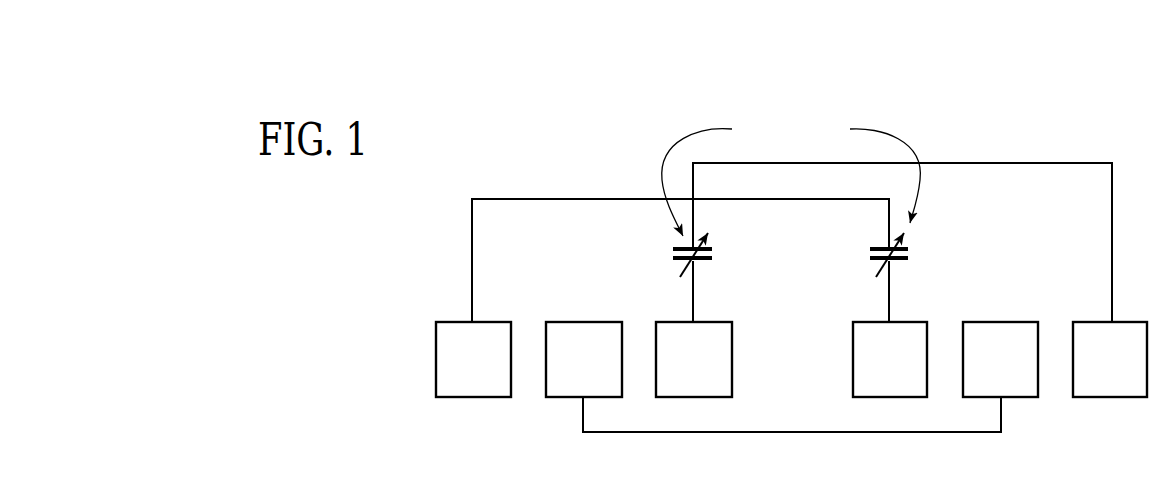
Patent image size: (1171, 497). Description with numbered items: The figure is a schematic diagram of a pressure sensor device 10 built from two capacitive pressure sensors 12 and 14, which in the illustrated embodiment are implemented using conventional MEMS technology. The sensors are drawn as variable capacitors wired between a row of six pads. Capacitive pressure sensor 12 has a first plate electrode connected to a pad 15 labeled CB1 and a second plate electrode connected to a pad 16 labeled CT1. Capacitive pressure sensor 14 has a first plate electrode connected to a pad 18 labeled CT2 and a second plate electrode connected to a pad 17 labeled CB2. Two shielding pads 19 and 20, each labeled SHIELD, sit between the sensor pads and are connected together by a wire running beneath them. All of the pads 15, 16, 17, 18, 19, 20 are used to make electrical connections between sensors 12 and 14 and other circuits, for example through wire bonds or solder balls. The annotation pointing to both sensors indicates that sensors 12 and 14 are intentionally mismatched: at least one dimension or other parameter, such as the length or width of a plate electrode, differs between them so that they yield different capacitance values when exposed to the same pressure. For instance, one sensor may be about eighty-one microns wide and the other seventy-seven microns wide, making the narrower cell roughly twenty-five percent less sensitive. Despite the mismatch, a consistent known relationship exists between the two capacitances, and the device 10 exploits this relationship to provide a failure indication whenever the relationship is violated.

The pressure sensor device 10 is at (501, 465).
The capacitive pressure sensor 12 is at (673, 250).
The capacitive pressure sensor 14 is at (870, 250).
The pad 15 is at (717, 322).
The pad 16 is at (1131, 322).
The pad 17 is at (912, 322).
The pad 18 is at (498, 322).
The shielding pad 19 is at (590, 322).
The shielding pad 20 is at (1004, 322).